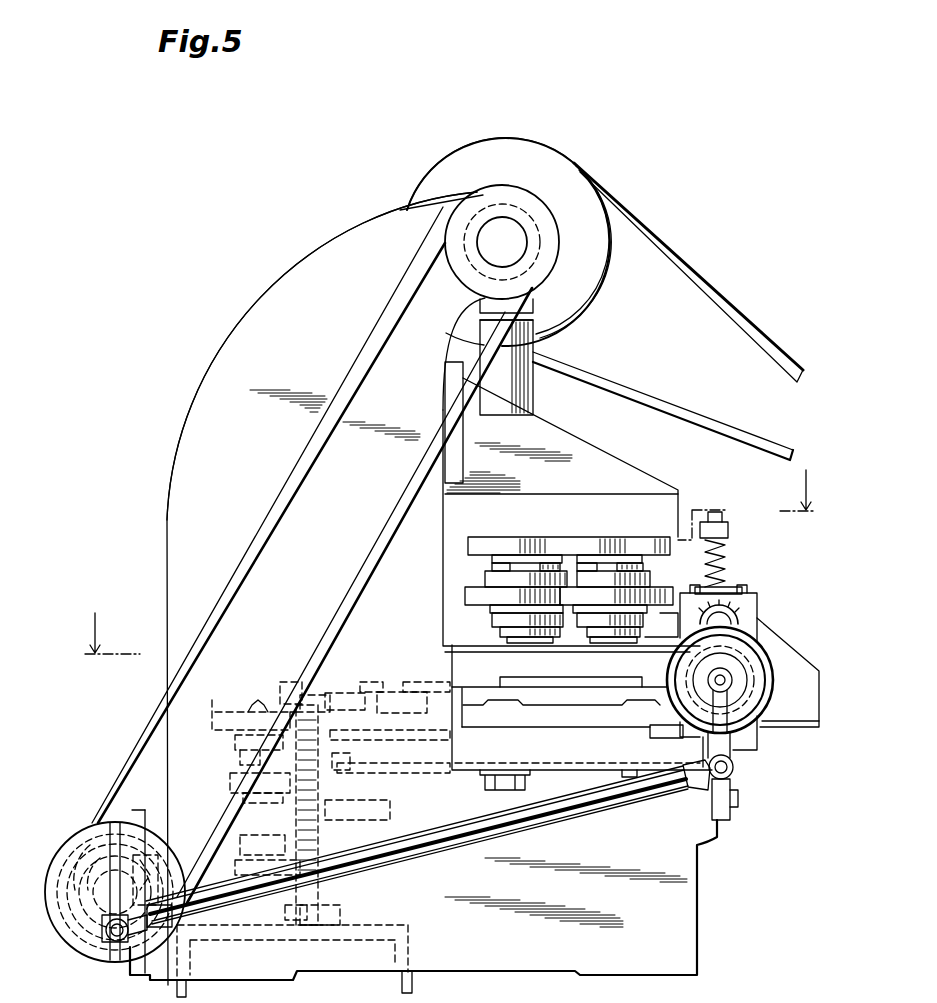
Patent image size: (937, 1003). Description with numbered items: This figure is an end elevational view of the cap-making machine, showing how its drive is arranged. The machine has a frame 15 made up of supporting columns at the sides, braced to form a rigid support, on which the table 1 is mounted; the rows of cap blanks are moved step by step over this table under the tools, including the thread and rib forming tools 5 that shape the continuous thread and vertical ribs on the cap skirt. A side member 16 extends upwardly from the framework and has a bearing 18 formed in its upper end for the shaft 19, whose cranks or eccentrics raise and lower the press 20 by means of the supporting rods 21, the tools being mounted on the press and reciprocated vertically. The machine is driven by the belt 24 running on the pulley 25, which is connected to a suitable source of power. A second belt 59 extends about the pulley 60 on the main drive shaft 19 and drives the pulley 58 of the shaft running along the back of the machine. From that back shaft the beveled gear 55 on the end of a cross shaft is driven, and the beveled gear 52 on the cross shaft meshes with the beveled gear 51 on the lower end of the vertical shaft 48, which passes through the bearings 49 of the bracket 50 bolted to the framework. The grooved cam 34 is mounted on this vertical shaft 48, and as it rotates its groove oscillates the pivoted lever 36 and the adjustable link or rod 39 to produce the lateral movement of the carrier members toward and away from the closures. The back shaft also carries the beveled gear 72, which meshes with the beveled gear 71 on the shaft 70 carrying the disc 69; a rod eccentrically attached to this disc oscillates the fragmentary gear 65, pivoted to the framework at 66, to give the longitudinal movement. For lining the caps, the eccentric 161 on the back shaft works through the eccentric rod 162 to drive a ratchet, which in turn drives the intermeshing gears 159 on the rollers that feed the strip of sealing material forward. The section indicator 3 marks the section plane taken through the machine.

The table 1 is at (571, 542).
The section line 3- 3 is at (450, 577).
The thread and rib forming tools 5 is at (486, 624).
The frame 15 is at (711, 859).
The side member 16 is at (315, 268).
The bearings 18 is at (503, 215).
The shaft 19 is at (503, 243).
The press 20 is at (606, 444).
The supporting rods 21 is at (535, 400).
The belt 24 is at (637, 228).
The pulley 25 is at (560, 165).
The grooved cam 34 is at (212, 700).
The pivoted lever 36 is at (282, 688).
The adjustable link or rod 39 is at (300, 690).
The vertical shaft 48 is at (258, 705).
The bearings 49 is at (235, 745).
The bracket 50 is at (283, 802).
The beveled gear 51 is at (250, 858).
The beveled gear 52 is at (292, 913).
The beveled gear 55 is at (110, 942).
The pulley 58 is at (62, 850).
The belt 59 is at (293, 496).
The pulley 60 is at (558, 258).
The fragmentary gear 65 is at (335, 760).
The pivot 66 is at (345, 808).
The disc 69 is at (330, 917).
The shaft 70 is at (228, 907).
The beveled gear 71 is at (155, 860).
The beveled gear 72 is at (97, 860).
The intermeshing gears 159 is at (738, 625).
The eccentric 161 is at (95, 925).
The eccentric rod 162 is at (558, 806).